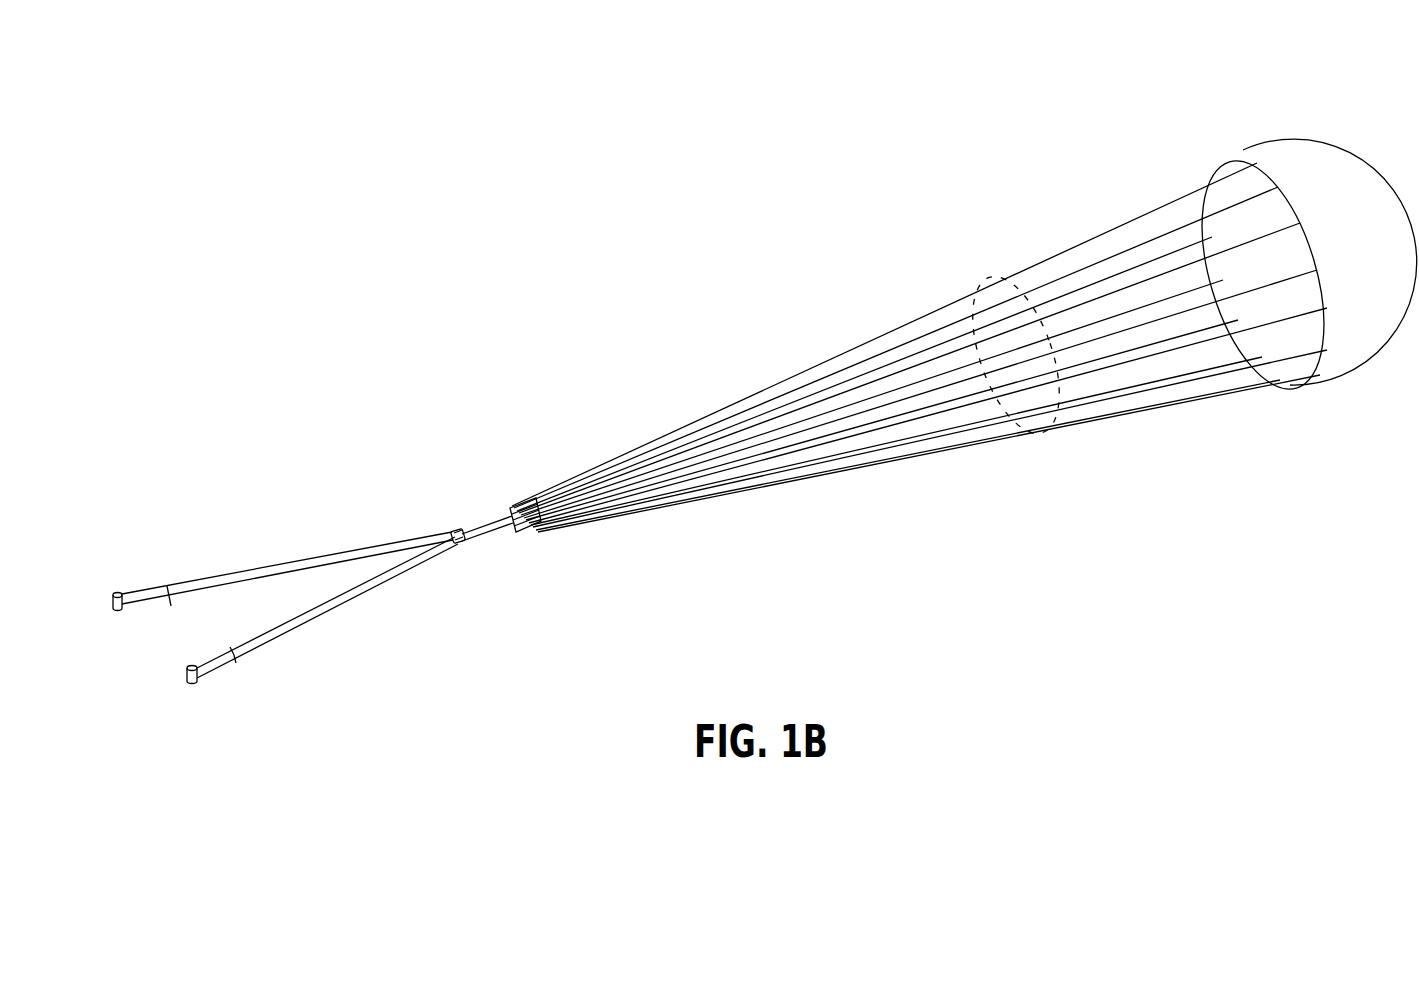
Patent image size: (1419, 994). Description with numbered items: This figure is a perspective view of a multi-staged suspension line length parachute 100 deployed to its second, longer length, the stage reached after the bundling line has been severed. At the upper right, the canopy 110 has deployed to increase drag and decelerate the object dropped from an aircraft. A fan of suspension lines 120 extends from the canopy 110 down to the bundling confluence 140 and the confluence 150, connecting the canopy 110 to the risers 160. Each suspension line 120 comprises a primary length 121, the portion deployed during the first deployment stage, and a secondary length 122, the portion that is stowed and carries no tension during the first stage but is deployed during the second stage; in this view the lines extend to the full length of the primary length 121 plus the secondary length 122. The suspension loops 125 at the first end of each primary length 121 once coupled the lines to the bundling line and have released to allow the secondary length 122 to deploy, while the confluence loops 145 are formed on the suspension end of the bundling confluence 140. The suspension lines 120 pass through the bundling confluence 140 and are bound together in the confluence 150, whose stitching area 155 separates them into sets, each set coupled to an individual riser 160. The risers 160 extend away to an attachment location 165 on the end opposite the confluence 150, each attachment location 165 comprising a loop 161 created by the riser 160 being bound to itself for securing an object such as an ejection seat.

The multi-staged suspension line length parachute 100 is at (388, 300).
The canopy 110 is at (1272, 160).
The suspension lines 120 is at (903, 283).
The primary length 121 is at (1130, 208).
The secondary length 122 is at (788, 373).
The suspension loops 125 is at (978, 287).
The bundling confluence 140 is at (498, 531).
The confluence loops 145 is at (543, 492).
The confluence 150 is at (473, 540).
The stitching area 155 is at (455, 534).
The risers 160 is at (270, 565).
The loop 161 is at (187, 663).
The attachment location 165 is at (118, 594).